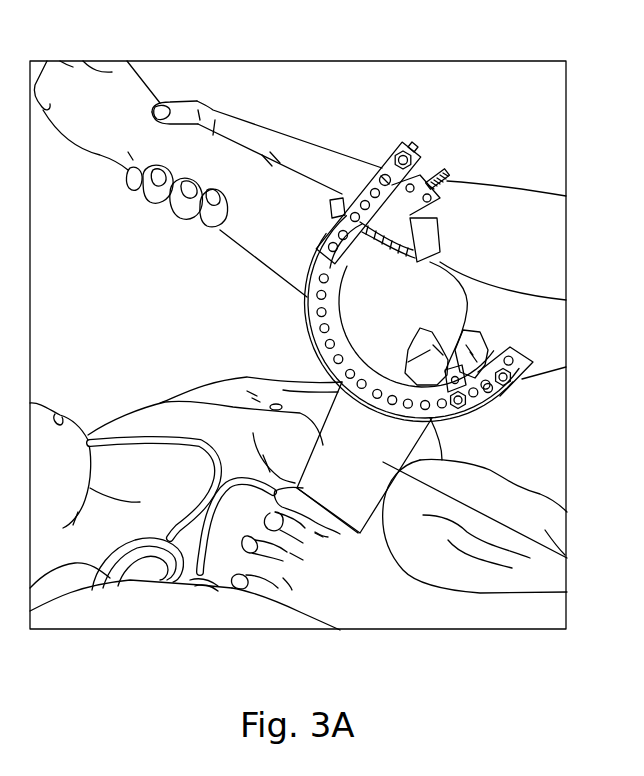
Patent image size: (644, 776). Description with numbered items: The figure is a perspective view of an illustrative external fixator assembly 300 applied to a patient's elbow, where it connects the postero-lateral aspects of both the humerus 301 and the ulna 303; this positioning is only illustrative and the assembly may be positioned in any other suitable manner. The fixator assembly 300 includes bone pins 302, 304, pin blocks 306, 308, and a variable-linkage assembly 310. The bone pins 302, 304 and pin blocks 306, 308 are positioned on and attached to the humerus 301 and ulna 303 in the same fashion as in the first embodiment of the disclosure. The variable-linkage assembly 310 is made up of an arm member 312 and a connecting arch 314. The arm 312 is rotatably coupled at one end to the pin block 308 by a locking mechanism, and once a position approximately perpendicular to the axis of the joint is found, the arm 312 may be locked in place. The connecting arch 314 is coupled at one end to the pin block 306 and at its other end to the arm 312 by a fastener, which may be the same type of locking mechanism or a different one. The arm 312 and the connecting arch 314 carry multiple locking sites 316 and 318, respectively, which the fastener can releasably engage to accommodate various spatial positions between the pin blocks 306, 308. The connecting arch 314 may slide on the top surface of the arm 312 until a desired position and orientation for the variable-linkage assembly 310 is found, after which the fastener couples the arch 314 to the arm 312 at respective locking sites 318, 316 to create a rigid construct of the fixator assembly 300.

The external fixator assembly 300 is at (183, 325).
The humerus 301 is at (566, 561).
The bone pin 302 is at (444, 358).
The ulna 303 is at (283, 192).
The bone pin 304 is at (450, 178).
The pin block 306 is at (484, 352).
The pin block 308 is at (440, 209).
The variable-linkage assembly 310 is at (300, 329).
The arm member 312 is at (328, 240).
The connecting arch 314 is at (526, 376).
The locking sites 316 is at (386, 176).
The locking sites 318 is at (490, 389).